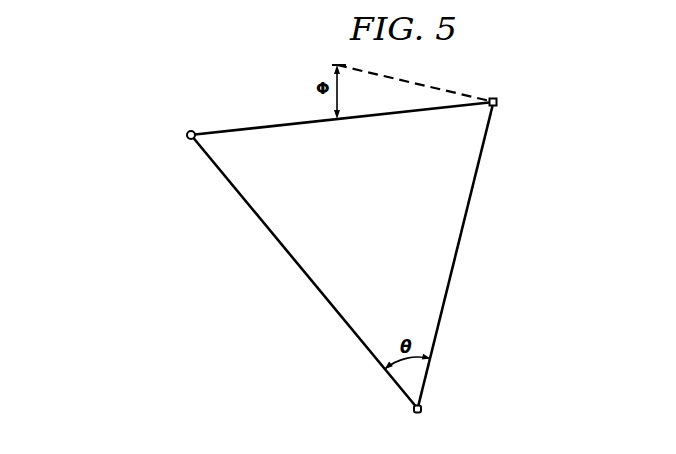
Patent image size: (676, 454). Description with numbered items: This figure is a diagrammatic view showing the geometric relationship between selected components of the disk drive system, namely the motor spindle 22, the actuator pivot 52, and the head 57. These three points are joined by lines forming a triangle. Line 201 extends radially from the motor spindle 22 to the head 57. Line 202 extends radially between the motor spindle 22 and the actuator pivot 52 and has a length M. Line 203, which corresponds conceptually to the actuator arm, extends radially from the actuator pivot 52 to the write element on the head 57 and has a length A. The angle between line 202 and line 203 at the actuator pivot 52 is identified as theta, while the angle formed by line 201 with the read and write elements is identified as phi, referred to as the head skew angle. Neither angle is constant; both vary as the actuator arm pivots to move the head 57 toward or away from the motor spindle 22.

The motor spindle 22 is at (190, 130).
The head 57 is at (497, 99).
The actuator pivot 52 is at (425, 408).
The line 201 is at (277, 125).
The line 202 is at (334, 315).
The line 203 is at (470, 201).